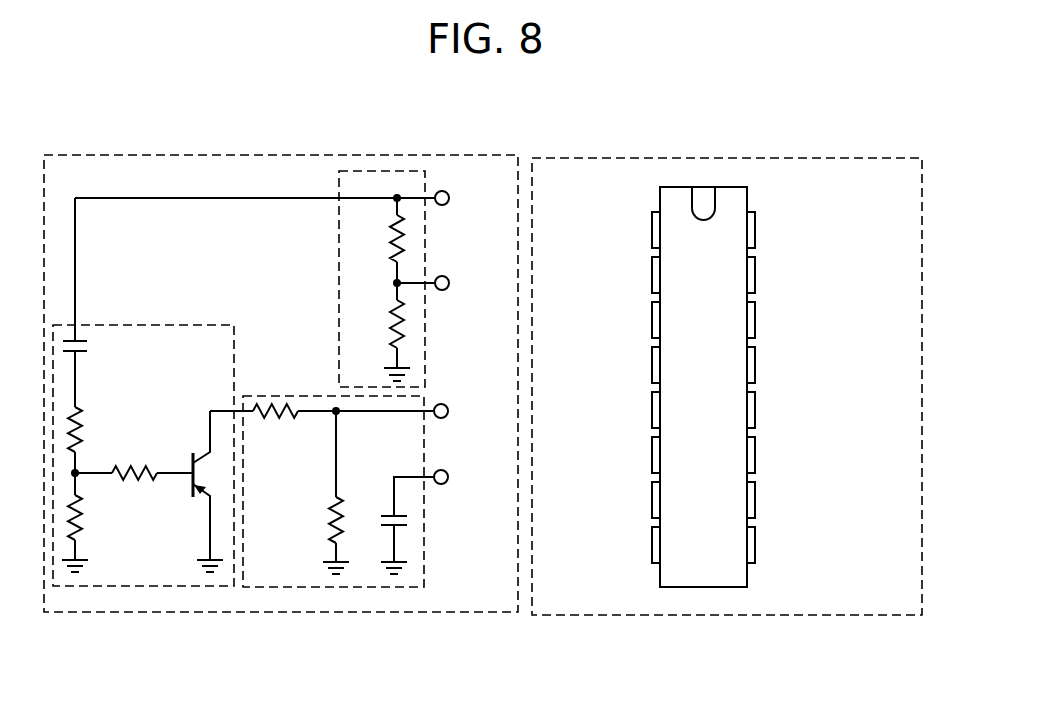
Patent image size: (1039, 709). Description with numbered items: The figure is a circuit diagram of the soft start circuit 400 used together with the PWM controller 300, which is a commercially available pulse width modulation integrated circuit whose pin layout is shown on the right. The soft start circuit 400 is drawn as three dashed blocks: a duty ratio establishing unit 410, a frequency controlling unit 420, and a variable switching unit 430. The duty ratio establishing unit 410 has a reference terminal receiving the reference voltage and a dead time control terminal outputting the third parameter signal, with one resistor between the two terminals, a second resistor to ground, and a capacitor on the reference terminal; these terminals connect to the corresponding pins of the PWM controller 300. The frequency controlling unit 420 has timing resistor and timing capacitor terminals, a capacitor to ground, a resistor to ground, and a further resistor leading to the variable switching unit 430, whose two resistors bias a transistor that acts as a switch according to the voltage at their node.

The PWM controller 300 is at (708, 615).
The soft start circuit 400 is at (240, 612).
The duty ratio establishing unit 410 is at (365, 170).
The frequency controlling unit 420 is at (333, 587).
The variable switching unit 430 is at (143, 586).